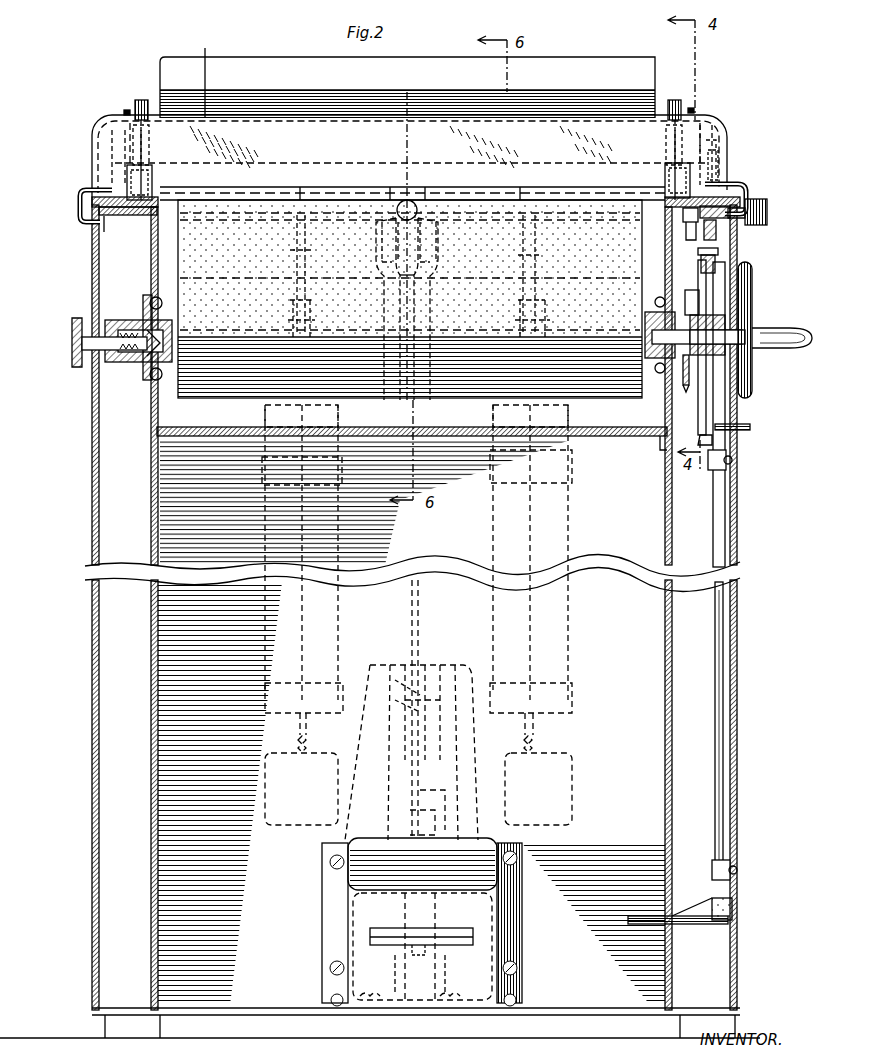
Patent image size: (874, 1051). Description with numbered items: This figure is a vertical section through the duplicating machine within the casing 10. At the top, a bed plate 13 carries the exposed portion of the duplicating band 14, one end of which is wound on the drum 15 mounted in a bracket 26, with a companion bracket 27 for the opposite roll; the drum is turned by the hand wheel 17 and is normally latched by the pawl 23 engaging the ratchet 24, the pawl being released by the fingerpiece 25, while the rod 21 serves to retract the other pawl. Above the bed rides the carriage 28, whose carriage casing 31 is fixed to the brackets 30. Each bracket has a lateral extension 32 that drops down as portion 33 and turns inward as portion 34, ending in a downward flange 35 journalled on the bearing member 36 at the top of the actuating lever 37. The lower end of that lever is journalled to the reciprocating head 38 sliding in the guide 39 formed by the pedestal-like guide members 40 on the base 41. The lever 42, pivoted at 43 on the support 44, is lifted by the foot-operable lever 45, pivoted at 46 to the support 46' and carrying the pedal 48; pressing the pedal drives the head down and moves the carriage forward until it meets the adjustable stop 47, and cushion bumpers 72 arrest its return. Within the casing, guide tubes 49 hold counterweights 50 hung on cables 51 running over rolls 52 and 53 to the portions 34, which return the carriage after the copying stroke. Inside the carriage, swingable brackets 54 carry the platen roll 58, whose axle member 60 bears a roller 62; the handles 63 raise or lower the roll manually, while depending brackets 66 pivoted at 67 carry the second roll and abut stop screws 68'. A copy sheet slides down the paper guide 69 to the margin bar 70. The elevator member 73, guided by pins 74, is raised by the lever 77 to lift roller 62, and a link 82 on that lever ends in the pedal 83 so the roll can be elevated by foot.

The casing 10 is at (743, 607).
The bed plate 13 is at (120, 215).
The duplicating band 14 is at (325, 200).
The drum 15 is at (590, 395).
The hand wheel 17 is at (750, 296).
The rod 21 is at (686, 392).
The pawl 23 is at (706, 405).
The ratchet 24 is at (700, 302).
The fingerpiece 25 is at (742, 430).
The bracket 26 is at (172, 322).
The bracket 27 is at (650, 310).
The carriage 28 is at (305, 104).
The bracket 30 is at (96, 133).
The carriage casing 31 is at (575, 122).
The lateral extension 32 is at (106, 192).
The downward portion 33 is at (78, 205).
The inward portion 34 is at (246, 236).
The downward flange 35 is at (380, 258).
The bearing member 36 is at (398, 284).
The actuating lever 37 is at (420, 616).
The reciprocating head 38 is at (412, 668).
The guide 39 is at (478, 815).
The guide member 40 is at (400, 690).
The base 41 is at (490, 1010).
The lever 42 is at (420, 795).
The pivot 43 is at (422, 864).
The support 44 is at (435, 820).
The foot-operable lever 45 is at (380, 900).
The pivot 46 is at (422, 946).
The support 46' is at (439, 975).
The adjustable stop 47 is at (760, 206).
The pedal 48 is at (422, 946).
The guide tube 49 is at (344, 546).
The counterweight 50 is at (300, 795).
The cable 51 is at (310, 612).
The roll 52 is at (308, 310).
The roll 53 is at (307, 248).
The swingable bracket 54 is at (150, 150).
The platen roll 58 is at (300, 158).
The axle member 60 is at (718, 150).
The roller 62 is at (720, 163).
The manually operable member 63 is at (141, 100).
The depending bracket 66 is at (110, 151).
The pivot 67 is at (150, 136).
The adjustable stop screw 68' is at (411, 91).
The paper guide 69 is at (592, 70).
The margin bar 70 is at (495, 200).
The cushion bumper 72 is at (153, 165).
The elevator member 73 is at (722, 232).
The pin 74 is at (694, 242).
The lever 77 is at (718, 260).
The link 82 is at (722, 698).
The pedal 83 is at (648, 916).